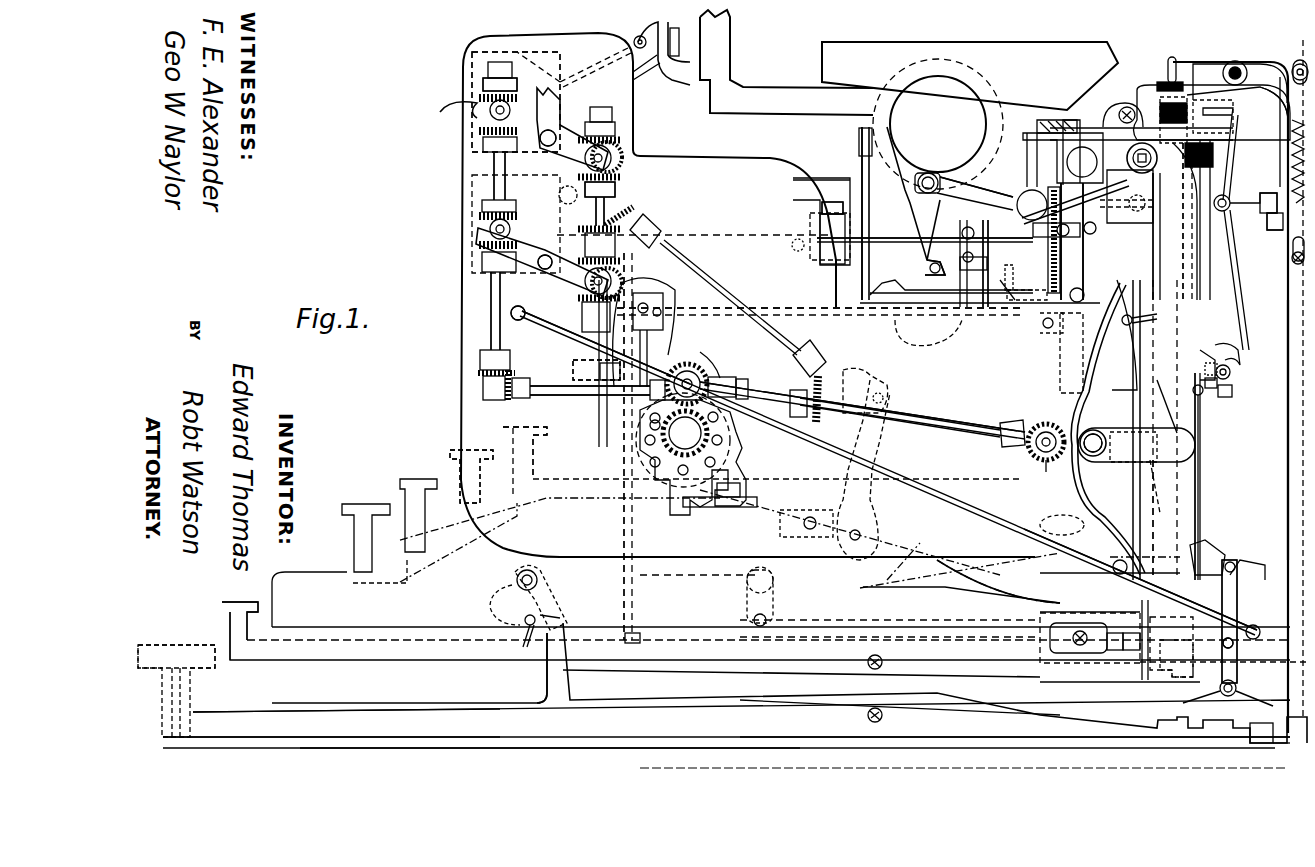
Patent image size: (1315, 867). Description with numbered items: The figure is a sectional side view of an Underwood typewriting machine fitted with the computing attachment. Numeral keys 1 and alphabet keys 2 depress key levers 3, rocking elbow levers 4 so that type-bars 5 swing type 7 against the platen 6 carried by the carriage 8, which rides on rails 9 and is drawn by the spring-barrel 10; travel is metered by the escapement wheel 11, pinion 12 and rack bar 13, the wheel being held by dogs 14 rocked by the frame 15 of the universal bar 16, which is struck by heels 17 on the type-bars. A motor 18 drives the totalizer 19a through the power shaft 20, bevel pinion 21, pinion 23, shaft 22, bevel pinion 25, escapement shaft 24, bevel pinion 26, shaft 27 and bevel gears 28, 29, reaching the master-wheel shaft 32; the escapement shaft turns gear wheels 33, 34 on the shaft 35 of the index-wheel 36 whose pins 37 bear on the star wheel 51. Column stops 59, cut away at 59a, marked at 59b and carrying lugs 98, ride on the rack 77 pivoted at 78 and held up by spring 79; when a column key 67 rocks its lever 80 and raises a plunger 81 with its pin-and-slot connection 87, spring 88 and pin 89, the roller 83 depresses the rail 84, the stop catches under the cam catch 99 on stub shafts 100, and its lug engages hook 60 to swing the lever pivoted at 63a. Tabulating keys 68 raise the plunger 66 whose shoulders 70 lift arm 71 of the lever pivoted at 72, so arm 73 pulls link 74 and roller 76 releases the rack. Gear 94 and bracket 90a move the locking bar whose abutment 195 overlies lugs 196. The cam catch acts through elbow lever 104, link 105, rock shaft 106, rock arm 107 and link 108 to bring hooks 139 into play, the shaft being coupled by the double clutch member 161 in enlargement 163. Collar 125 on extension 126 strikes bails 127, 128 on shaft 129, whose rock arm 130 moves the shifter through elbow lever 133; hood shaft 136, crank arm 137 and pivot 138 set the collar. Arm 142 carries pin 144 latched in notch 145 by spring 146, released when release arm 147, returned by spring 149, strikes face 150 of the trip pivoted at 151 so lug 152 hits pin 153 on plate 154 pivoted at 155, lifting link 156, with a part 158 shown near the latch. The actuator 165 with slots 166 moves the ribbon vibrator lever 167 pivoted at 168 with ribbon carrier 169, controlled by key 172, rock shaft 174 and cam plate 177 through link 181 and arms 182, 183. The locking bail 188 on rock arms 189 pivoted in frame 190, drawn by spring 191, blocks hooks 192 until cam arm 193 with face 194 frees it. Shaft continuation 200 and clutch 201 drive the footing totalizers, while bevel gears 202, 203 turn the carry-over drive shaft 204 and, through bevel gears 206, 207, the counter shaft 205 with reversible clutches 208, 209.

The numeral keys 1 is at (548, 435).
The alphabet keys 2 is at (450, 455).
The key levers 3 is at (850, 535).
The elbow levers 4 is at (882, 450).
The type-bars 5 is at (763, 393).
The platen 6 is at (938, 126).
The type 7 is at (580, 368).
The carriage 8 is at (1058, 47).
The rails 9 is at (663, 88).
The spring-barrel 10 is at (1078, 270).
The escapement wheel 11 is at (1048, 260).
The pinion 12 is at (1004, 269).
The rack bar 13 is at (1018, 200).
The dogs 14 is at (1045, 295).
The frame 15 is at (1002, 281).
The universal bar 16 is at (867, 288).
The heels 17 is at (826, 362).
The motor 18 is at (998, 581).
The totalizer 19a is at (475, 73).
The power shaft 20 is at (1044, 476).
The bevel pinion 21 is at (1045, 422).
The shaft 22 is at (935, 428).
The pinion 23 is at (1010, 425).
The escapement shaft 24 is at (722, 373).
The bevel pinion 25 is at (737, 383).
The bevel pinion 26 is at (687, 374).
The shaft 27 is at (590, 396).
The bevel gear 28 is at (512, 380).
The bevel gear 29 is at (480, 362).
The shaft 32 is at (484, 125).
The gear wheel 33 is at (710, 354).
The gear wheel 34 is at (646, 409).
The shaft 35 is at (683, 440).
The index-wheel 36 is at (742, 458).
The settable stops or pins 37 is at (683, 480).
The star wheel 51 is at (508, 230).
The column stops 59 is at (1195, 98).
The cutaway portion 59a is at (1298, 65).
The plate edge 59b is at (1250, 95).
The hook 60 is at (1126, 196).
The pivot 63a is at (835, 200).
The plunger 66 is at (1162, 160).
The column-selecting key 67 is at (200, 646).
The tabulating keys 68 is at (240, 605).
The shoulders 70 is at (1155, 463).
The arm 71 is at (1136, 445).
The pivot 72 is at (1097, 455).
The arm 73 is at (1094, 433).
The link 74 is at (1149, 318).
The bearing roller 76 is at (1035, 205).
The rack 77 is at (1160, 105).
The pivot 78 is at (1123, 107).
The spring 79 is at (1110, 128).
The lever 80 is at (1048, 720).
The plunger 81 is at (1296, 430).
The idle roller 83 is at (1172, 58).
The rail 84 is at (1165, 82).
The pin-and-slot connection 87 is at (1295, 262).
The spring 88 is at (1292, 150).
The pin 89 is at (1015, 673).
The bracket 90a is at (1256, 211).
The gear 94 is at (1232, 200).
The lugs 98 is at (1240, 64).
The cam catch 99 is at (1230, 148).
The stub shafts 100 is at (1214, 220).
The elbow lever 104 is at (1172, 221).
The link 105 is at (1133, 436).
The rock shaft 106 is at (1003, 640).
The rock arm 107 is at (1122, 651).
The link 108 is at (632, 620).
The settable lug or collar 125 is at (1262, 733).
The rearward extension 126 is at (1287, 743).
The bail 127 is at (1259, 692).
The bail 128 is at (1184, 700).
The shaft 129 is at (1224, 695).
The rock arm 130 is at (498, 323).
The elbow lever 133 is at (525, 295).
The shaft 136 is at (195, 703).
The crank arm 137 is at (205, 735).
The pivot 138 is at (405, 749).
The hooks 139 is at (1106, 558).
The arm 142 is at (1237, 615).
The pin 144 is at (1245, 562).
The notch 145 is at (1210, 560).
The spring 146 is at (1238, 588).
The release arm 147 is at (1240, 298).
The spring 149 is at (1232, 370).
The flat face 150 is at (1225, 346).
The pivot 151 is at (1210, 362).
The lug 152 is at (1205, 382).
The pin 153 is at (1205, 368).
The plate 154 is at (1202, 400).
The pivot 155 is at (1228, 395).
The link 156 is at (1200, 495).
The pin 158 is at (1255, 558).
The double clutch member 161 is at (1085, 654).
The enlargement 163 is at (1198, 650).
The actuator 165 is at (990, 260).
The slots 166 is at (957, 237).
The ribbon vibrator lever 167 is at (928, 343).
The pivot 168 is at (925, 276).
The ribbon carrier 169 is at (868, 237).
The key 172 is at (540, 325).
The rock shaft 174 is at (818, 298).
The cam plate 177 is at (618, 515).
The link 181 is at (830, 620).
The arm 182 is at (768, 603).
The arm 183 is at (715, 590).
The locking bail 188 is at (519, 646).
The rock arms 189 is at (505, 598).
The frame 190 is at (538, 578).
The spring 191 is at (555, 590).
The hooks 192 is at (514, 622).
The cam arm 193 is at (550, 678).
The cam face 194 is at (560, 618).
The abutment 195 is at (1268, 230).
The lugs 196 is at (1282, 238).
The shaft continuation 200 is at (492, 162).
The manually reversible clutch 201 is at (455, 105).
The bevel gear 202 is at (822, 400).
The bevel gear 203 is at (845, 372).
The carry-over drive shaft 204 is at (738, 302).
The counter shaft 205 is at (605, 210).
The bevel gear 206 is at (648, 216).
The bevel gear 207 is at (595, 200).
The reversible clutch 208 is at (615, 168).
The reversible clutch 209 is at (618, 278).